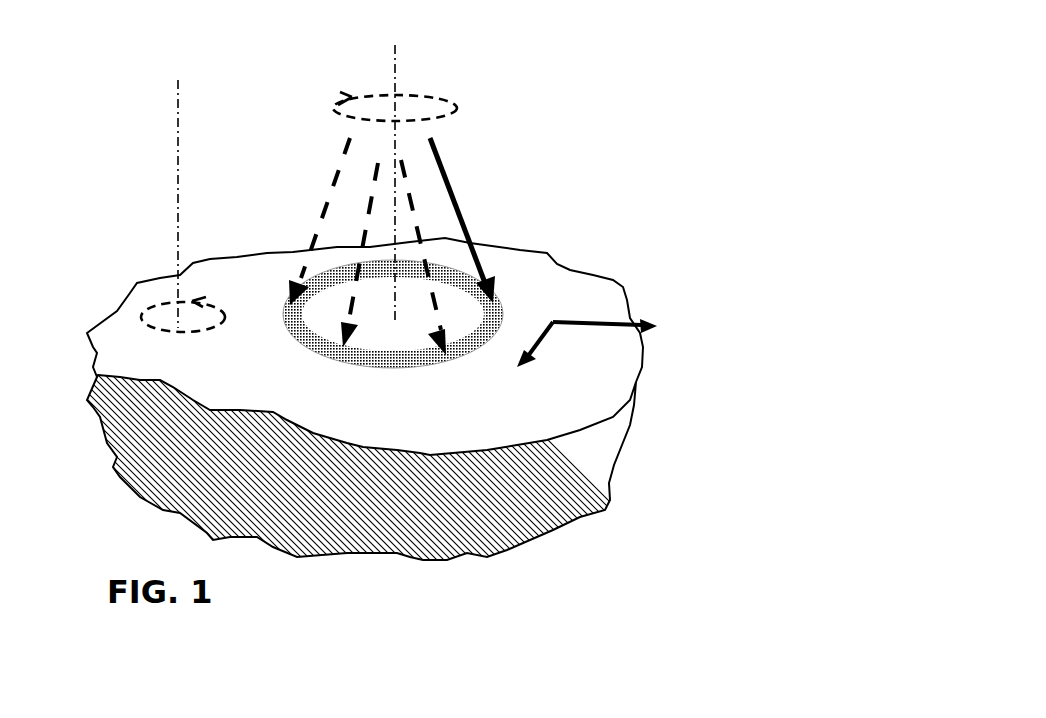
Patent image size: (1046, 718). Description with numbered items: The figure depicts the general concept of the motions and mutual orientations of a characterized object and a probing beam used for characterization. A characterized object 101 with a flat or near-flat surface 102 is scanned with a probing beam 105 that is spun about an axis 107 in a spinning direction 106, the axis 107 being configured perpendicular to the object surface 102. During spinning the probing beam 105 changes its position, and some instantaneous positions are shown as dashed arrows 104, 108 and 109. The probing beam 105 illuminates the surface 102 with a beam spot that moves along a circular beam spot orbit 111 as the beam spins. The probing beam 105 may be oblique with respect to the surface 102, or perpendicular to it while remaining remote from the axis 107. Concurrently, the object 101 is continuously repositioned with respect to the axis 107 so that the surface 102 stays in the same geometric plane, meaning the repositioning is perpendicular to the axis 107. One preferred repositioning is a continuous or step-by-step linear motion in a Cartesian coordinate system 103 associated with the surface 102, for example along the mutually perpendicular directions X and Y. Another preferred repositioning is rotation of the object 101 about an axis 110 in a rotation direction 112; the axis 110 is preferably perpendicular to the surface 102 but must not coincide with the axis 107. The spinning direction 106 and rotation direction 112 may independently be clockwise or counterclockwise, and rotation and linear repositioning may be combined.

The characterized object 101 is at (583, 458).
The object surface 102 is at (553, 393).
The Cartesian coordinate system 103 is at (553, 322).
The dashed arrow 104 is at (445, 330).
The probing beam 105 is at (470, 227).
The spinning direction 106 is at (457, 107).
The axis of probing beam spinning 107 is at (393, 75).
The dashed arrow 108 is at (370, 203).
The dashed arrow 109 is at (320, 225).
The axis of object rotation 110 is at (178, 145).
The beam spot orbit 111 is at (287, 330).
The rotation direction 112 is at (147, 314).